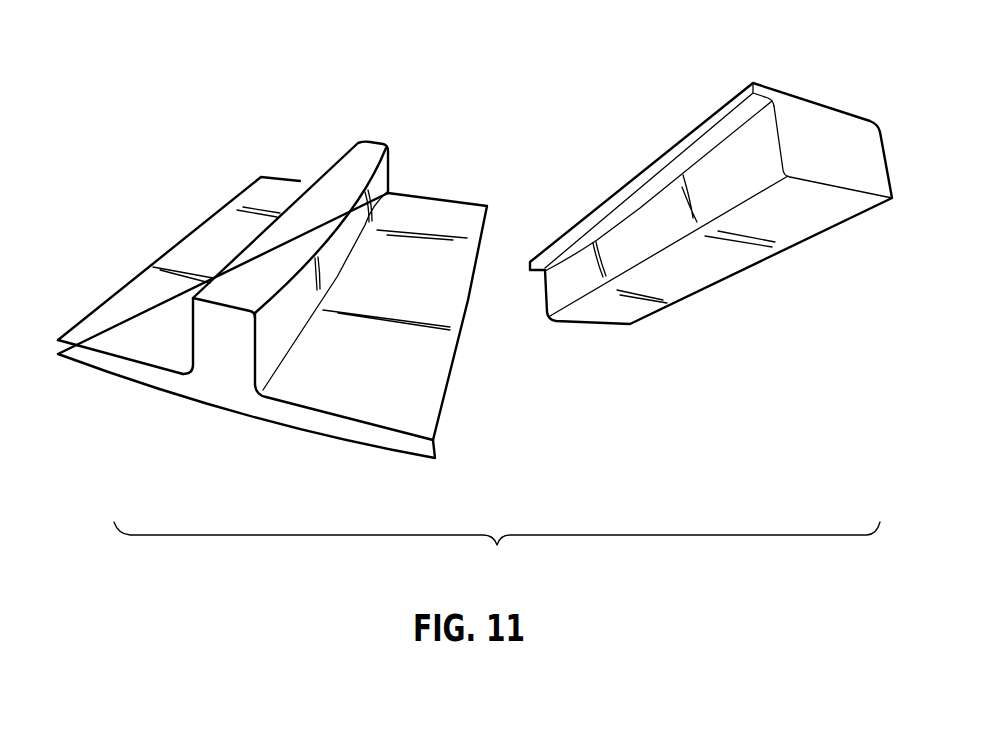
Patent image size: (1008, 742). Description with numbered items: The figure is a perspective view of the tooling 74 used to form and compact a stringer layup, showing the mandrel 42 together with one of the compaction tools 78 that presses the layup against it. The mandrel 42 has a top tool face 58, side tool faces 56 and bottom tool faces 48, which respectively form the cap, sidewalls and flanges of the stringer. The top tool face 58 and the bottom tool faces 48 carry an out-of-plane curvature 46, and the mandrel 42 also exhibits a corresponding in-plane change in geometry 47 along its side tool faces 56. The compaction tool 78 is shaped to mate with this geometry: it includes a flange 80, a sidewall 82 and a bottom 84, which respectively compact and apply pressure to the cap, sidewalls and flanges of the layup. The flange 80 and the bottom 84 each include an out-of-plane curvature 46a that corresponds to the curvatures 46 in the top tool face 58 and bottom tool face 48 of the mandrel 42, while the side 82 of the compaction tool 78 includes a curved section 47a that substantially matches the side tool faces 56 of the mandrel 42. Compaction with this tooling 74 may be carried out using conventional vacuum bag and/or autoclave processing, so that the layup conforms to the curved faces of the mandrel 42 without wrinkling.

The mandrel 42 is at (221, 133).
The out-of-plane curvature 46 is at (311, 209).
The in-plane change in geometry 47 is at (361, 220).
The bottom tool face 48 is at (378, 402).
The side tool face 56 is at (270, 342).
The top tool face 58 is at (233, 293).
The tooling 74 is at (497, 550).
The compaction tool 78 is at (800, 82).
The flange 80 is at (738, 117).
The sidewall 82 is at (757, 165).
The bottom 84 is at (637, 310).
The out-of-plane curvature 46a is at (634, 199).
The curved section 47a is at (596, 284).